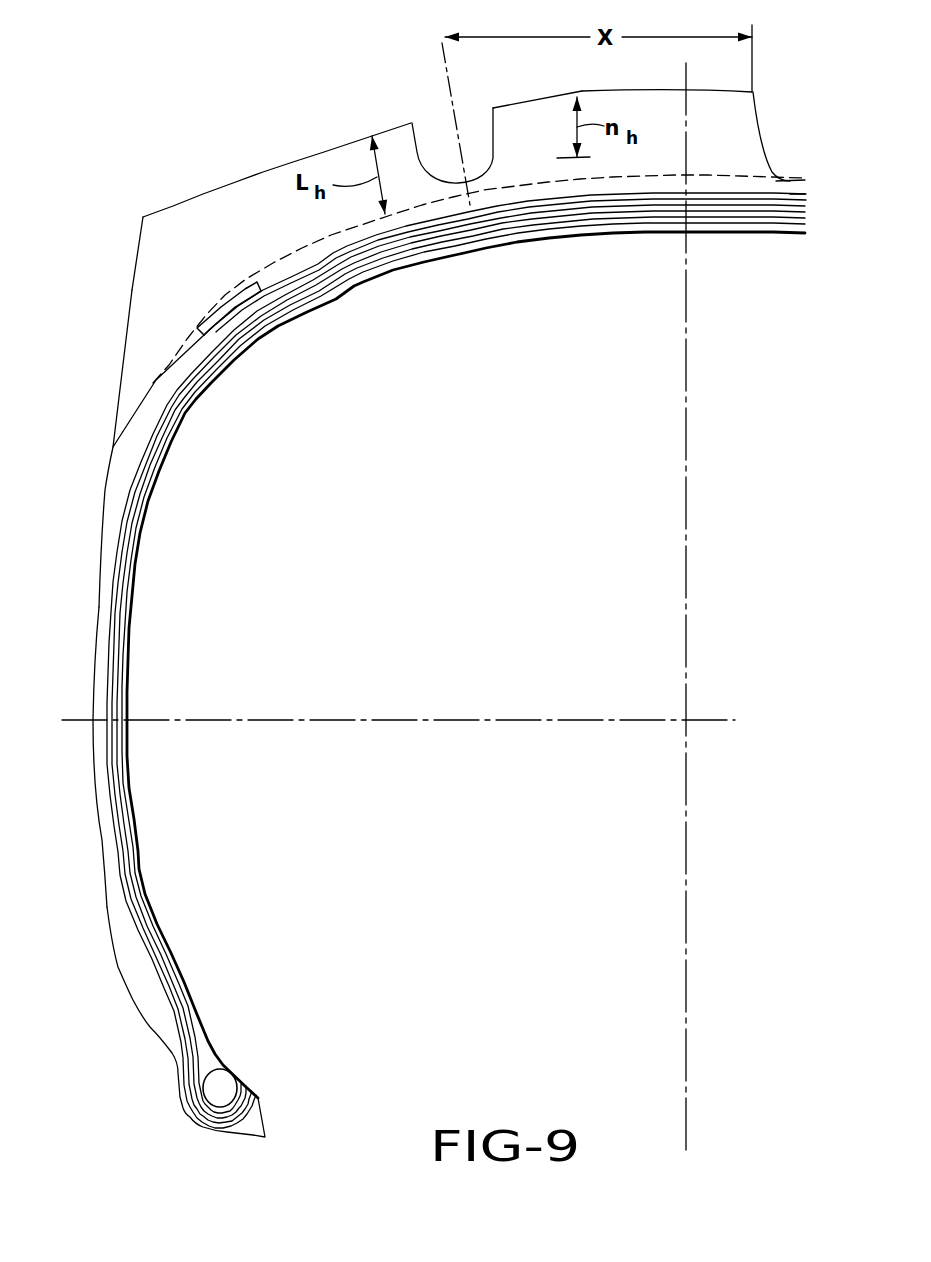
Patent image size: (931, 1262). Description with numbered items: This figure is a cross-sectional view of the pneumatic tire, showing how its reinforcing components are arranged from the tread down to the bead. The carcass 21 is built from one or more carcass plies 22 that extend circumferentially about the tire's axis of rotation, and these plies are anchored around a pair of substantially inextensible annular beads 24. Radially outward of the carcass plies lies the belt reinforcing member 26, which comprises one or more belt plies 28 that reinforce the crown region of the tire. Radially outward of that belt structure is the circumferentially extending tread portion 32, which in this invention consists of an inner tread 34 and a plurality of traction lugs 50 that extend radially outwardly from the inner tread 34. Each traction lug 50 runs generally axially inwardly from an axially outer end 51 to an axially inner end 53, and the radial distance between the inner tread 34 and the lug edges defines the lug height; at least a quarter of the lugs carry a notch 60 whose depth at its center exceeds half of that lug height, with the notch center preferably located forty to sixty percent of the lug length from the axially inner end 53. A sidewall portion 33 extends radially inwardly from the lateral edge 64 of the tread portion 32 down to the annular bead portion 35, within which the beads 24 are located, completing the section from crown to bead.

The carcass 21 is at (105, 598).
The carcass plies 22 is at (135, 488).
The annular beads 24 is at (213, 1090).
The belt reinforcing member 26 is at (445, 228).
The belt plies 28 is at (601, 199).
The tread portion 32 is at (116, 297).
The sidewall portion 33 is at (108, 497).
The inner tread 34 is at (790, 193).
The bead portion 35 is at (133, 1029).
The traction lug 50 is at (740, 140).
The axially outer end 51 is at (138, 253).
The axially inner end 53 is at (753, 92).
The notch 60 is at (443, 153).
The lateral edge 64 is at (118, 393).